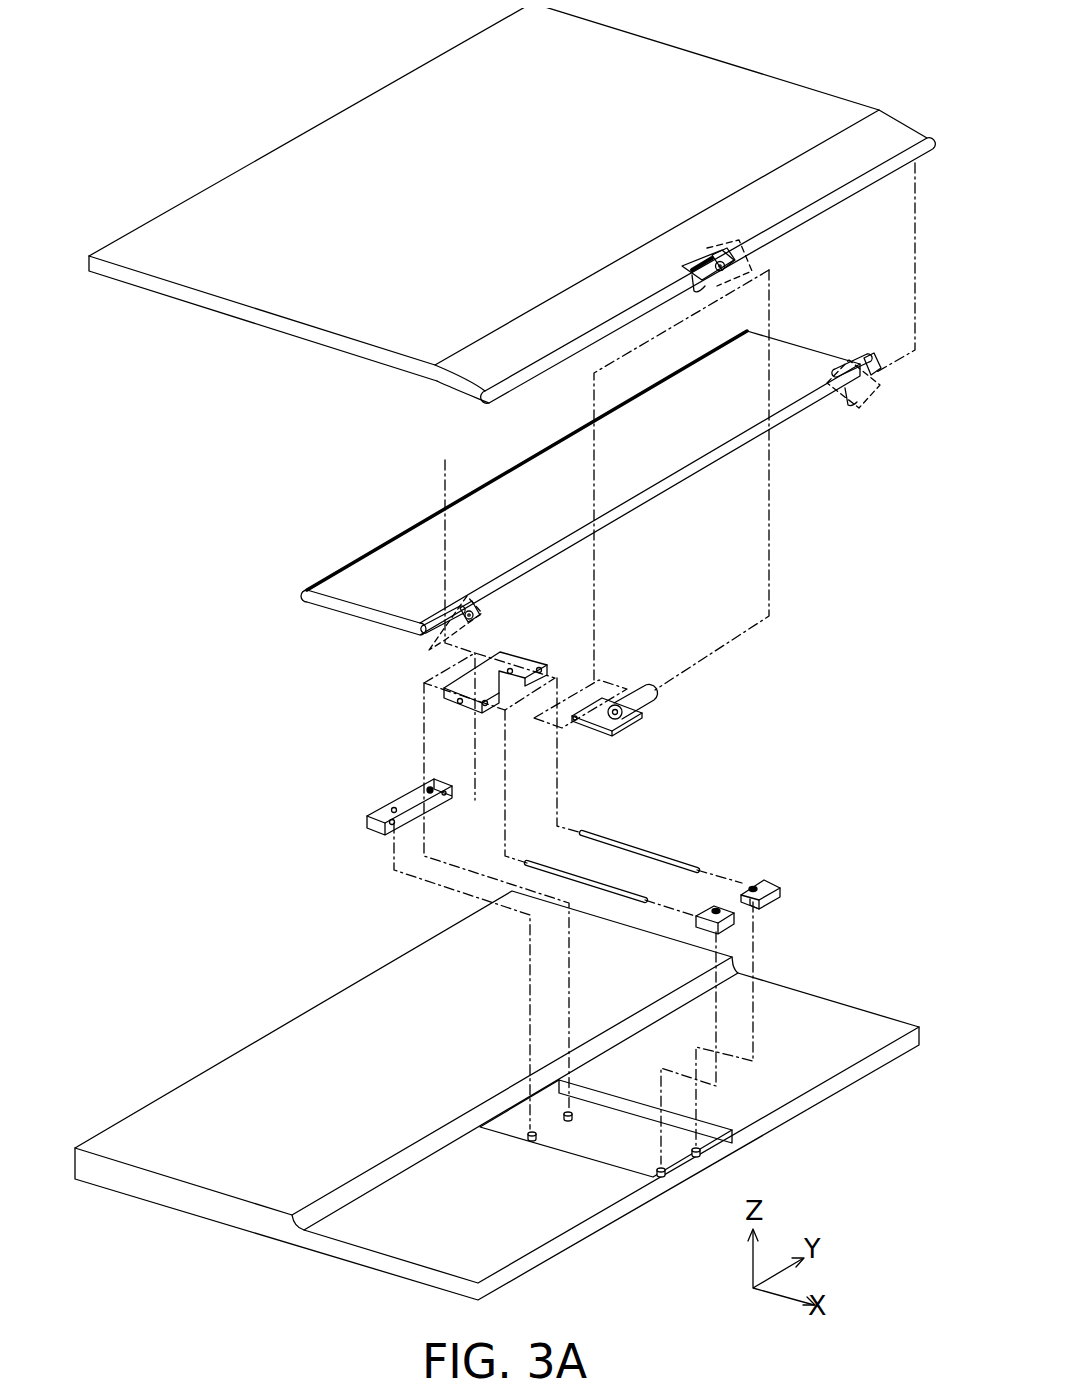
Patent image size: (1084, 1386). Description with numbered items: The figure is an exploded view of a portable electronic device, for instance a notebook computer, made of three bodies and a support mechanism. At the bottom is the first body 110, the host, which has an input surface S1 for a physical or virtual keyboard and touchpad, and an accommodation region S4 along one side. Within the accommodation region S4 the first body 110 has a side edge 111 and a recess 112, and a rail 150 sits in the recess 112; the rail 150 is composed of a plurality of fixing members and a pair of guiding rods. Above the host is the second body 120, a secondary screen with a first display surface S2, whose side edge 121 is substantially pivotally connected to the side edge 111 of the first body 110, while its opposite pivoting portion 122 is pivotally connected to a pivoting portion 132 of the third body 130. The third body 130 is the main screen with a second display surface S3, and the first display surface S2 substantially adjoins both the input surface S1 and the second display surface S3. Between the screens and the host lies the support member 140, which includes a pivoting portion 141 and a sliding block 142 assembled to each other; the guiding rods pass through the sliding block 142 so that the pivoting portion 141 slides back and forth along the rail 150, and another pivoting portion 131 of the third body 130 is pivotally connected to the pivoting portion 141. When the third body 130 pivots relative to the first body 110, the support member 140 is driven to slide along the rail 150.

The first body 110 is at (497, 1095).
The side edge 111 is at (320, 1214).
The recess 112 is at (626, 1147).
The second body 120 is at (535, 509).
The side edge 121 is at (346, 560).
The pivoting portion 122 is at (427, 637).
The third body 130 is at (506, 218).
The pivoting portion 131 is at (728, 231).
The pivoting portion 132 is at (436, 393).
The support member 140 is at (646, 716).
The pivoting portion 141 is at (628, 698).
The sliding block 142 is at (517, 658).
The rail 150 is at (784, 918).
The input surface S1 is at (231, 1084).
The first display surface S2 is at (422, 535).
The second display surface S3 is at (259, 328).
The accommodation region S4 is at (412, 1236).